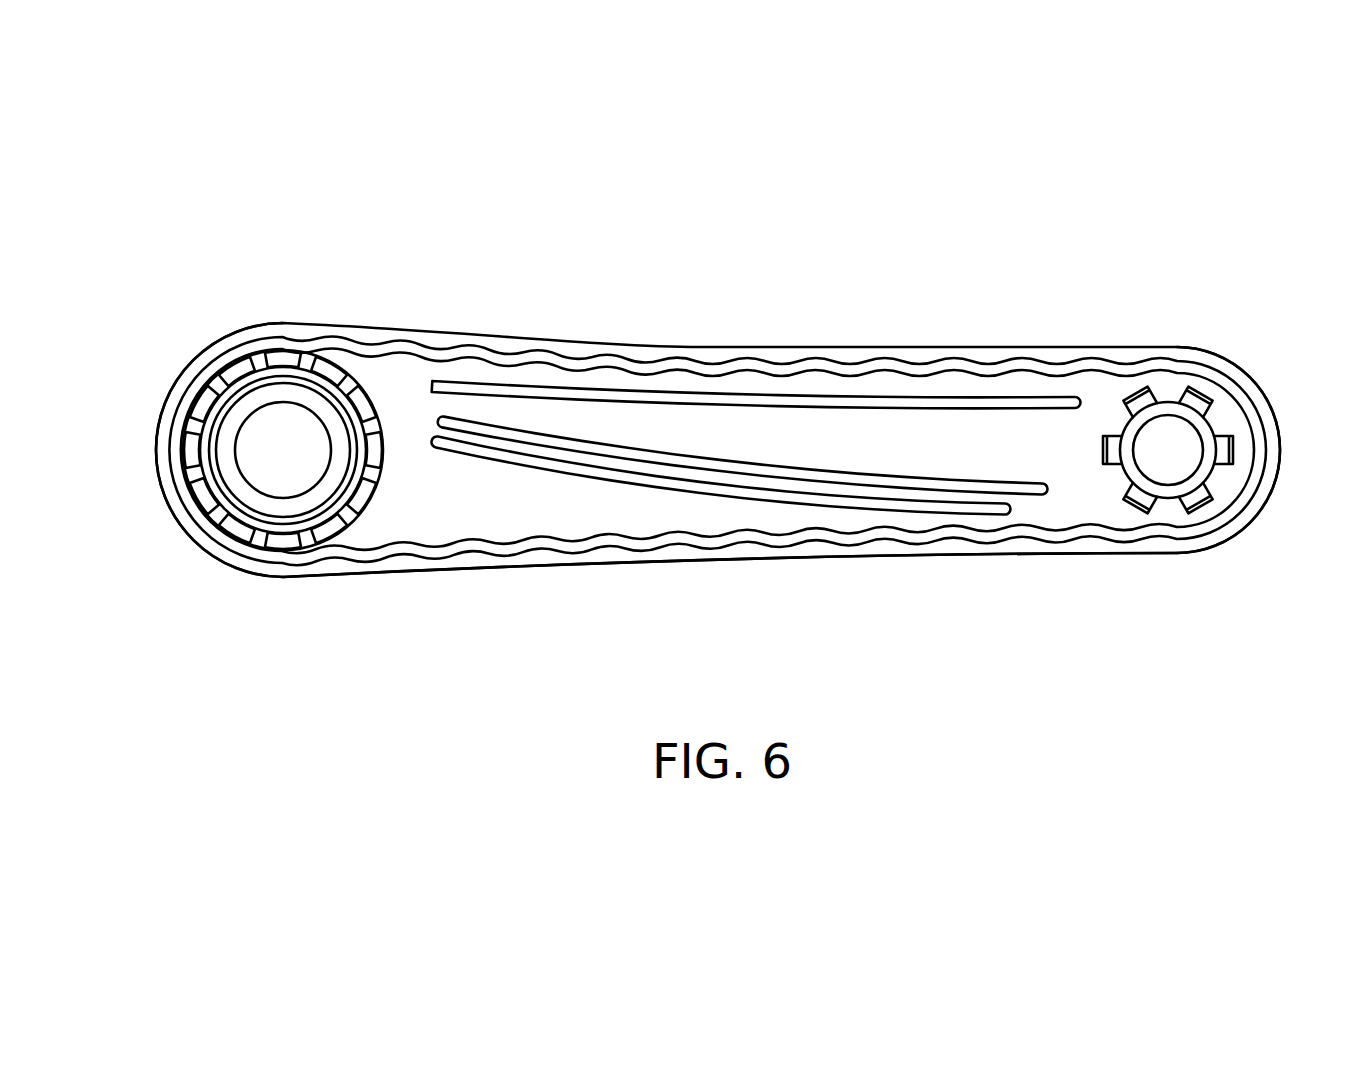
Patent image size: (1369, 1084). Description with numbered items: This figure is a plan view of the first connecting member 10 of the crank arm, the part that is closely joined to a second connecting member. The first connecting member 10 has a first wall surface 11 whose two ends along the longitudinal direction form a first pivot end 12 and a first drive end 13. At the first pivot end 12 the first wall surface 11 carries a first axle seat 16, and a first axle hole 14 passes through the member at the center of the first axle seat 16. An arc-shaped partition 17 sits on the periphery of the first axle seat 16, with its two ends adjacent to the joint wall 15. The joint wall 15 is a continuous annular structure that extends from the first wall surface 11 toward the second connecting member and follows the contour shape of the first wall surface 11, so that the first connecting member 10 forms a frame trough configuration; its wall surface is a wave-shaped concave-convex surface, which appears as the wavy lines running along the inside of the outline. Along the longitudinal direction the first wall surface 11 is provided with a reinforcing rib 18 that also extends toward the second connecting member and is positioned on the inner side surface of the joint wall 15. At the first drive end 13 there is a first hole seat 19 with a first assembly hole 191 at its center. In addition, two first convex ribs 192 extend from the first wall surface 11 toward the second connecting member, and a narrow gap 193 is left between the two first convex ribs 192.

The first connecting member 10 is at (686, 342).
The first wall surface 11 is at (865, 555).
The first pivot end 12 is at (230, 335).
The first drive end 13 is at (1240, 368).
The first axle hole 14 is at (311, 404).
The joint wall 15 is at (523, 547).
The first axle seat 16 is at (195, 408).
The partition 17 is at (383, 407).
The reinforcing rib 18 is at (912, 405).
The first hole seat 19 is at (1148, 392).
The first assembly hole 191 is at (1181, 463).
The first convex rib 192 is at (700, 460).
The narrow gap 193 is at (780, 478).